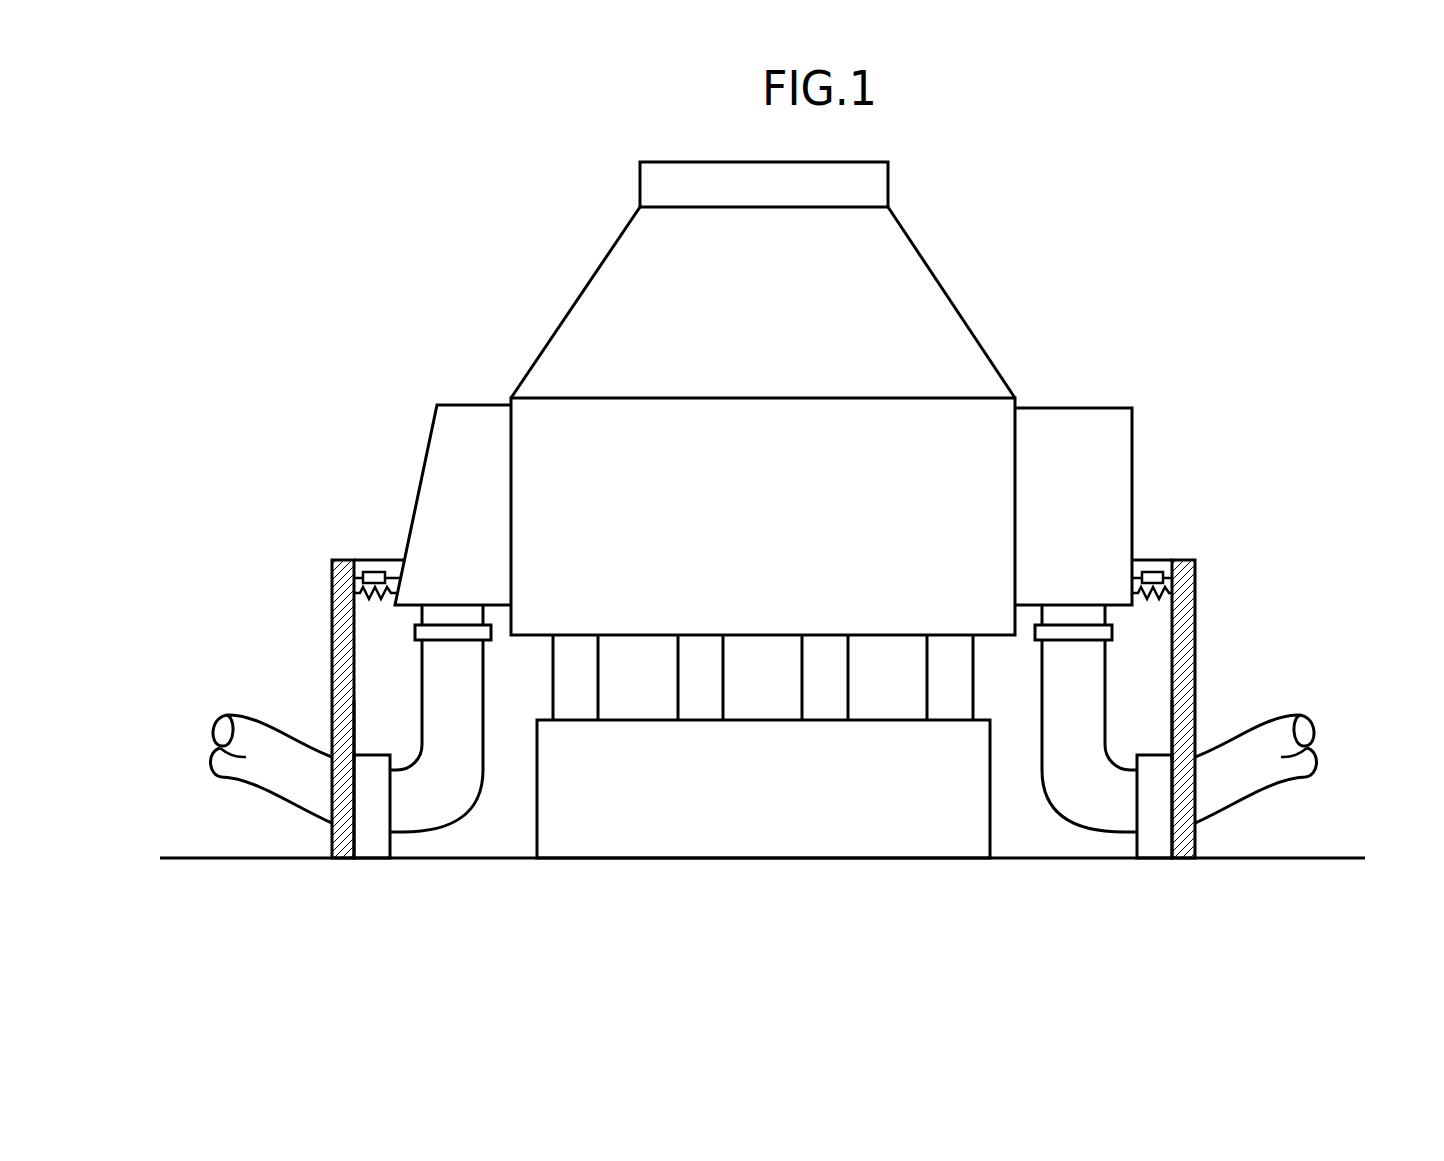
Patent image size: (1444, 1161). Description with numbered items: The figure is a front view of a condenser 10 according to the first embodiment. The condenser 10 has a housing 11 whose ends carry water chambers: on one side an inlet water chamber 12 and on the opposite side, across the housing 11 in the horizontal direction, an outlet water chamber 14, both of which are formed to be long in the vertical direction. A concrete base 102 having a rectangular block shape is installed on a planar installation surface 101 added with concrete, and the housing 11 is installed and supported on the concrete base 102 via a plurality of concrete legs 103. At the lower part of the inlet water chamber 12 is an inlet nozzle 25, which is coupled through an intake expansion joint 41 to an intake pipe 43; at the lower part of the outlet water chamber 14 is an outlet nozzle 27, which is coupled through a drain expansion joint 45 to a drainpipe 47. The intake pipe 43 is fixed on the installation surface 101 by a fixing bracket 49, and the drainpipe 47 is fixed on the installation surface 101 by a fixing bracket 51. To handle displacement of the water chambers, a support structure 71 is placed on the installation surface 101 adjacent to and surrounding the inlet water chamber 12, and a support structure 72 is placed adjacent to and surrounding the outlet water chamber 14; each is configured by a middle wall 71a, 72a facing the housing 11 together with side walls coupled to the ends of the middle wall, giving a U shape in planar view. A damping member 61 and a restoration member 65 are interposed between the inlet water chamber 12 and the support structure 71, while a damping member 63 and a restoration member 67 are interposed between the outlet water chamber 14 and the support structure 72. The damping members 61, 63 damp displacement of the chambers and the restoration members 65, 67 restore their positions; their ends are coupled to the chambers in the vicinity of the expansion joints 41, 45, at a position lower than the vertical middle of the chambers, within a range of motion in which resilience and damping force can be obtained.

The condenser 10 is at (1076, 196).
The housing 11 is at (927, 315).
The inlet water chamber 12 is at (1113, 432).
The outlet water chamber 14 is at (432, 450).
The inlet nozzle 25 is at (1181, 620).
The outlet nozzle 27 is at (321, 657).
The intake expansion joint 41 is at (1105, 632).
The drain expansion joint 45 is at (417, 633).
The intake pipe 43 is at (1309, 740).
The drainpipe 47 is at (218, 740).
The fixing bracket 49 is at (1153, 840).
The fixing bracket 51 is at (373, 840).
The damping member 61 is at (1148, 570).
The damping member 63 is at (373, 572).
The restoration member 65 is at (1160, 590).
The restoration member 67 is at (375, 600).
The support structure 71 is at (1207, 633).
The middle wall 71a is at (1195, 672).
The support structure 72 is at (322, 662).
The middle wall 72a is at (333, 710).
The installation surface 101 is at (1275, 858).
The concrete base 102 is at (765, 825).
The concrete legs 103 is at (960, 885).